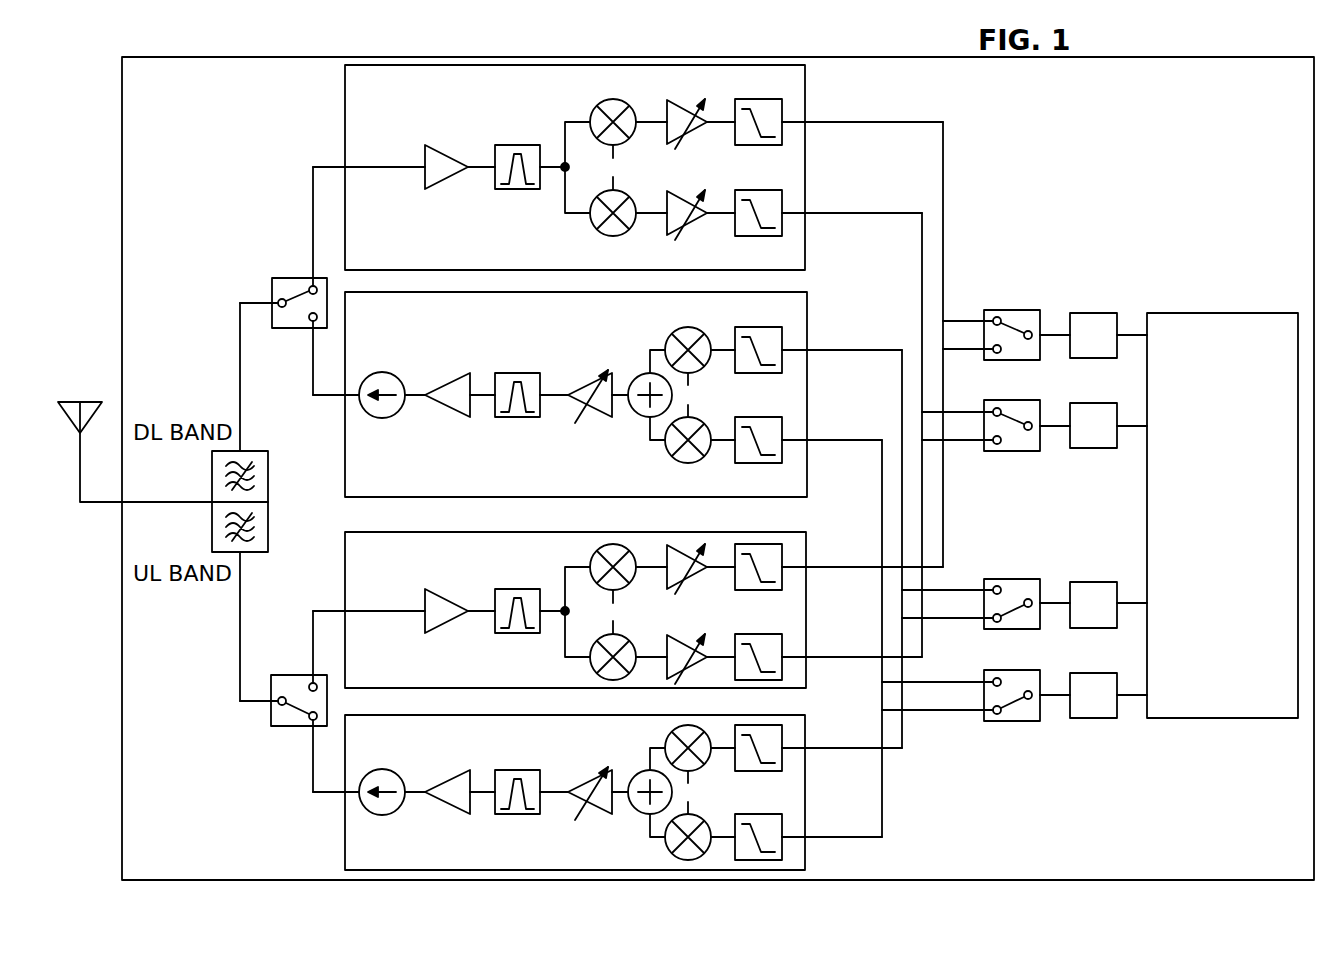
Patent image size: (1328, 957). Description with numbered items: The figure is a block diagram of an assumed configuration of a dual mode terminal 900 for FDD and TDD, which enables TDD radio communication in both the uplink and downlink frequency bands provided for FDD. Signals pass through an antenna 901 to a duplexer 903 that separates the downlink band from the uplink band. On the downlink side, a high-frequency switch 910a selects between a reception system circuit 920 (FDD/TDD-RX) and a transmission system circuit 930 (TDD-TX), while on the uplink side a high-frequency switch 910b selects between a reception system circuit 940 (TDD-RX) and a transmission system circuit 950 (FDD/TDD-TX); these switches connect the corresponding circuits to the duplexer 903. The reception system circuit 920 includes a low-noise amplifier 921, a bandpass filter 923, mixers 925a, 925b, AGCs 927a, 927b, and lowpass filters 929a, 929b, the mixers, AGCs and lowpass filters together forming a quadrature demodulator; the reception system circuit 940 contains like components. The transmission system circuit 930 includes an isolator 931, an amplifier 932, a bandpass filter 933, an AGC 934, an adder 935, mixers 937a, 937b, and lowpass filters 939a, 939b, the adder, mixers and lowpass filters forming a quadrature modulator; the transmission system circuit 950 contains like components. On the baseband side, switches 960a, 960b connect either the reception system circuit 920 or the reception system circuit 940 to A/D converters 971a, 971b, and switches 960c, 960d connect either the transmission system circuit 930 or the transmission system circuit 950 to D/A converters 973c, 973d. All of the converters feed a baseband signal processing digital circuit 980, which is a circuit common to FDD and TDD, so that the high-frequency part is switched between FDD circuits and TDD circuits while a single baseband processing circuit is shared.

The dual mode terminal 900 is at (1124, 57).
The antenna 901 is at (92, 400).
The duplexer 903 is at (270, 515).
The high-frequency switch 910a is at (288, 276).
The high-frequency switch 910b is at (297, 728).
The reception system circuit 920 is at (807, 84).
The low-noise amplifier 921 is at (446, 151).
The bandpass filter 923 is at (518, 145).
The mixer 925a is at (613, 99).
The mixer 925b is at (614, 236).
The AGC 927a is at (683, 100).
The AGC 927b is at (693, 233).
The lowpass filter 929a is at (758, 99).
The lowpass filter 929b is at (759, 236).
The transmission system circuit 930 is at (808, 308).
The isolator 931 is at (383, 419).
The amplifier 932 is at (446, 376).
The bandpass filter 933 is at (518, 372).
The AGC 934 is at (590, 376).
The adder 935 is at (638, 418).
The mixer 937a is at (688, 326).
The mixer 937b is at (689, 463).
The lowpass filter 939a is at (758, 326).
The lowpass filter 939b is at (759, 463).
The reception system circuit 940 is at (808, 612).
The transmission system circuit 950 is at (808, 853).
The switch 960a is at (1011, 310).
The switch 960b is at (1011, 400).
The switch 960c is at (1011, 579).
The switch 960d is at (1011, 670).
The A/D converter 971a is at (1093, 313).
The A/D converter 971b is at (1093, 403).
The D/A converter 973c is at (1093, 582).
The D/A converter 973d is at (1093, 673).
The baseband signal processing digital circuit 980 is at (1224, 312).